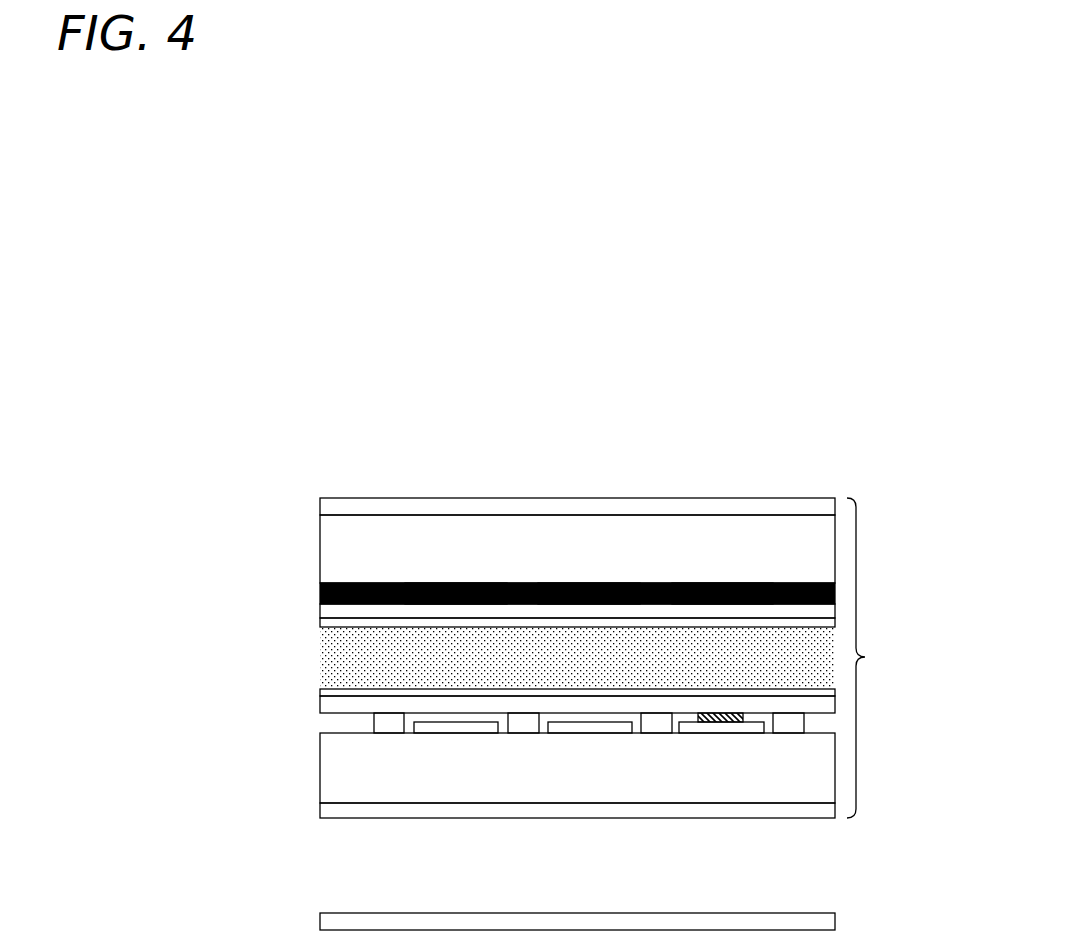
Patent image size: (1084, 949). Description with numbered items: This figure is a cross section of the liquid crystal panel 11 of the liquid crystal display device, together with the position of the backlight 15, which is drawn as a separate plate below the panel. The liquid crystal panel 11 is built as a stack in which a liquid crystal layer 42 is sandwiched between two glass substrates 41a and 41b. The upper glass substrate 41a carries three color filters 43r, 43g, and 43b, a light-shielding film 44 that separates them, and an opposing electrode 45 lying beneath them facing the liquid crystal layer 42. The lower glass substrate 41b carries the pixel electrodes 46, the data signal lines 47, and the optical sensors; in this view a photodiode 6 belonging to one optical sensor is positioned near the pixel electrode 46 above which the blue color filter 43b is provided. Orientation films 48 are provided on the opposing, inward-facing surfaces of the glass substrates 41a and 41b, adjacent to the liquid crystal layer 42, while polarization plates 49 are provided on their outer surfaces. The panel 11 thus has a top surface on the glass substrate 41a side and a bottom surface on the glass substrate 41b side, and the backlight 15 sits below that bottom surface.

The photodiode 6 is at (723, 723).
The liquid crystal panel 11 is at (872, 658).
The backlight 15 is at (838, 921).
The glass substrate 41a is at (320, 550).
The glass substrate 41b is at (320, 768).
The liquid crystal layer 42 is at (320, 660).
The red color filter 43r is at (457, 583).
The green color filter 43g is at (590, 583).
The blue color filter 43b is at (722, 583).
The light-shielding film 44 is at (320, 590).
The opposing electrode 45 is at (320, 612).
The pixel electrode 46 is at (487, 728).
The data signal line 47 is at (392, 722).
The orientation film 48 is at (320, 622).
The polarization plate 49 is at (320, 506).